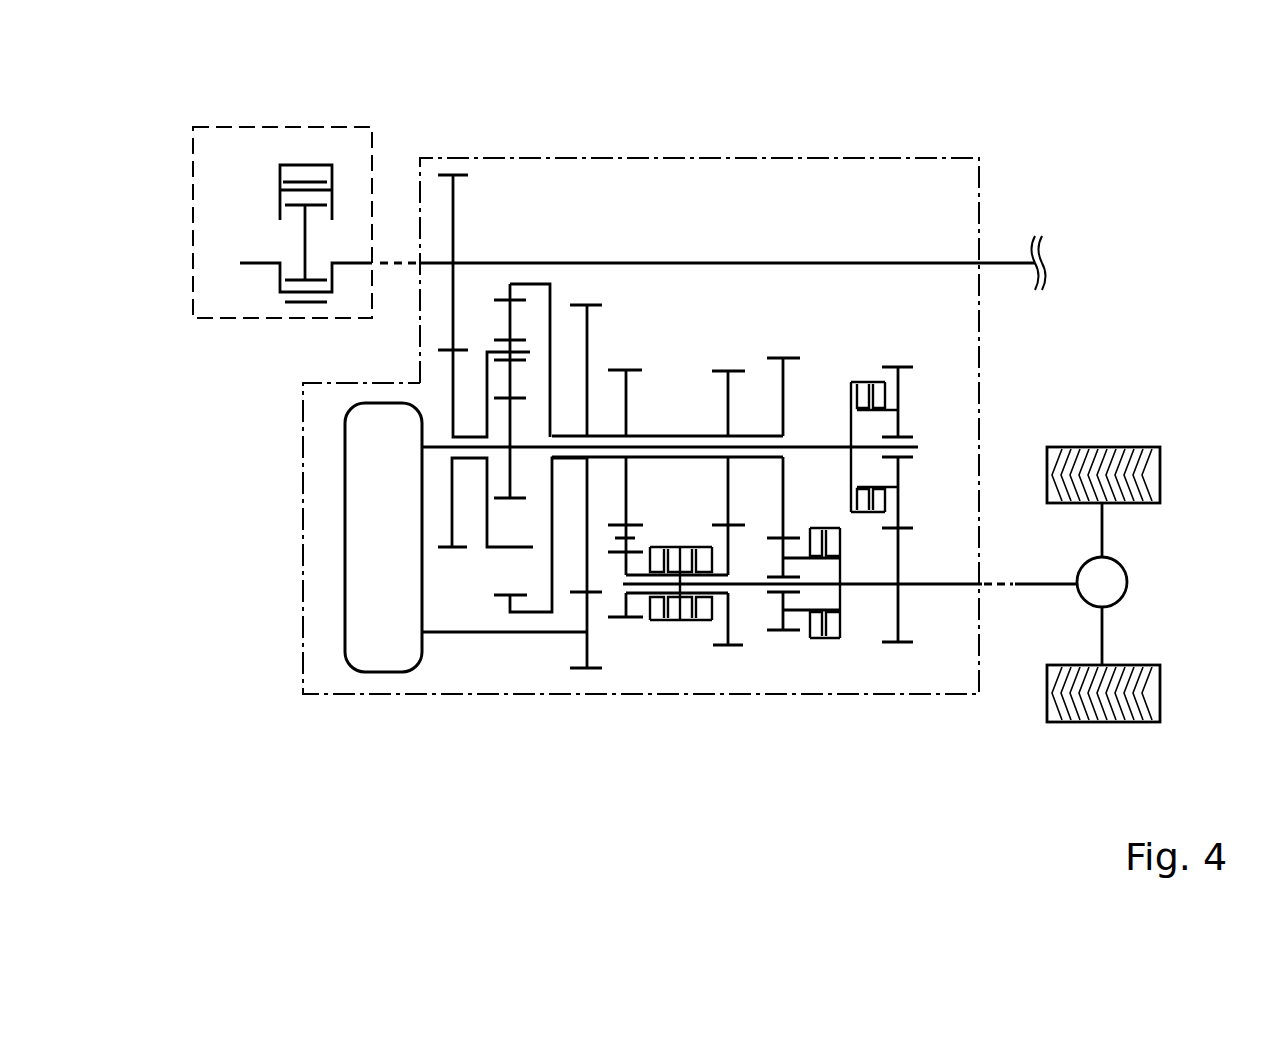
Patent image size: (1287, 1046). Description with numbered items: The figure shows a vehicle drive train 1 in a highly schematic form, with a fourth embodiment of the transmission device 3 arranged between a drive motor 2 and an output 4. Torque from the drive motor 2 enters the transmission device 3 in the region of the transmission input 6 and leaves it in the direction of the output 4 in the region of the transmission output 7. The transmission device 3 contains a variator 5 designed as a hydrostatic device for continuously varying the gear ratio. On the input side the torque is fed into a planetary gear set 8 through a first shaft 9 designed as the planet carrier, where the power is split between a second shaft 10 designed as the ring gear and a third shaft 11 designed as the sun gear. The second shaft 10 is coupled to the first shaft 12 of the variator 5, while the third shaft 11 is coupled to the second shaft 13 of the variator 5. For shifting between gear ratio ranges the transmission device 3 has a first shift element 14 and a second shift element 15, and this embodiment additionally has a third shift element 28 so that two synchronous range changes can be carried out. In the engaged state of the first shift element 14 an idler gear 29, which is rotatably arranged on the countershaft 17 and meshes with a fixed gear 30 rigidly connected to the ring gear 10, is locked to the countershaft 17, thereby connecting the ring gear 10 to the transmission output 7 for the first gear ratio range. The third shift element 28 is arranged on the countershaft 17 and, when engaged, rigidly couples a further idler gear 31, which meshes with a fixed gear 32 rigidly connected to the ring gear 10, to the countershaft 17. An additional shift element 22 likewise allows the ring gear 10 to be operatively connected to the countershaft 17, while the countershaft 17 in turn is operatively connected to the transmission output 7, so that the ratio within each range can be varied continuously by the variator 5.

The vehicle drive train 1 is at (278, 588).
The drive motor 2 is at (228, 125).
The transmission device 3 is at (367, 694).
The output 4 is at (1094, 702).
The variator 5 is at (382, 592).
The transmission input 6 is at (440, 444).
The transmission output 7 is at (980, 592).
The planetary gear set 8 is at (520, 285).
The first shaft 9 is at (490, 350).
The second shaft 10 is at (542, 283).
The third shaft 11 is at (510, 450).
The first shaft of the variator 12 is at (455, 632).
The second shaft of the variator 13 is at (440, 444).
The first shift element 14 is at (698, 656).
The second shift element 15 is at (866, 346).
The countershaft 17 is at (880, 585).
The additional shift element 22 is at (664, 656).
The third shift element 28 is at (827, 647).
The idler gear 29 is at (728, 615).
The fixed gear 30 is at (720, 370).
The idler gear 31 is at (775, 630).
The fixed gear 32 is at (772, 355).